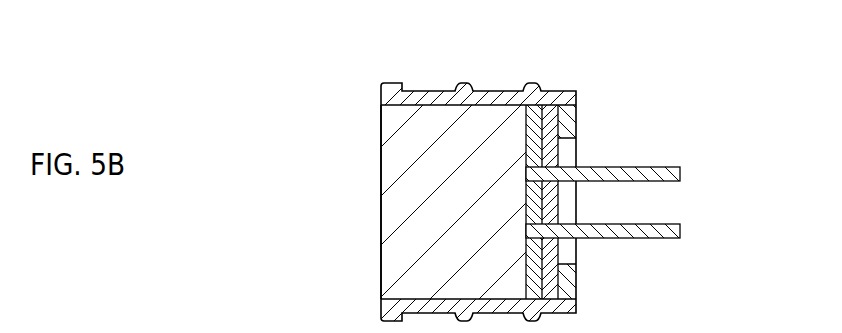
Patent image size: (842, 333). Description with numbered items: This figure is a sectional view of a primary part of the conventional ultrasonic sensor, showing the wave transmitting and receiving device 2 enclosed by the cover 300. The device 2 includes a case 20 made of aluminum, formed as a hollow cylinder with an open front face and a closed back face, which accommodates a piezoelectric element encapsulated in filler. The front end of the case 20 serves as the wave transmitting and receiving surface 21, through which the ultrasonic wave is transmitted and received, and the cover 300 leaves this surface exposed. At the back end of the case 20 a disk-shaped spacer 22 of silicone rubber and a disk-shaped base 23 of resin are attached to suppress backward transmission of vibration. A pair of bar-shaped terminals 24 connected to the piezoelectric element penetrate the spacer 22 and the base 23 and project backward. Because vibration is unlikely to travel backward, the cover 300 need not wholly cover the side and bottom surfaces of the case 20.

The cover 300 is at (382, 83).
The wave transmitting and receiving device 2 is at (439, 122).
The case 20 is at (398, 217).
The wave transmitting and receiving surface 21 is at (382, 164).
The spacer 22 is at (535, 118).
The base 23 is at (552, 116).
The terminals 24 is at (680, 235).